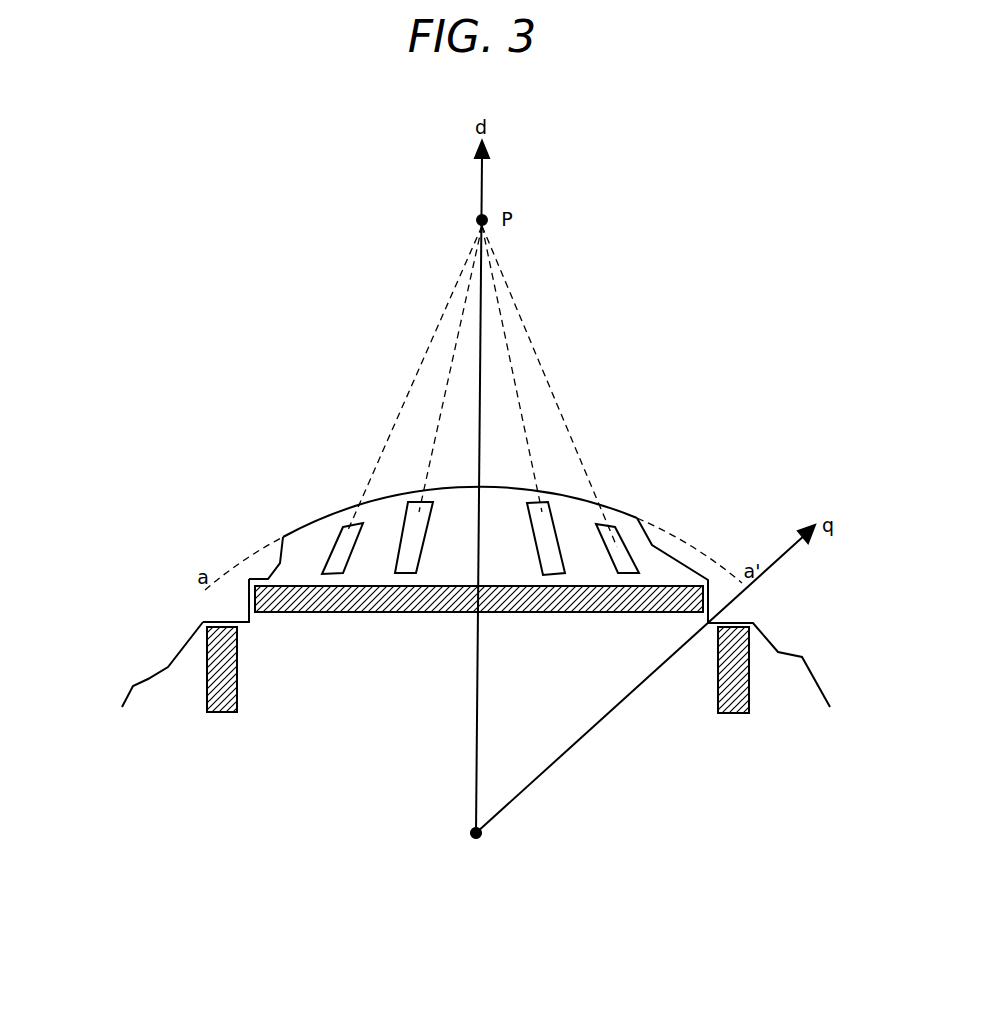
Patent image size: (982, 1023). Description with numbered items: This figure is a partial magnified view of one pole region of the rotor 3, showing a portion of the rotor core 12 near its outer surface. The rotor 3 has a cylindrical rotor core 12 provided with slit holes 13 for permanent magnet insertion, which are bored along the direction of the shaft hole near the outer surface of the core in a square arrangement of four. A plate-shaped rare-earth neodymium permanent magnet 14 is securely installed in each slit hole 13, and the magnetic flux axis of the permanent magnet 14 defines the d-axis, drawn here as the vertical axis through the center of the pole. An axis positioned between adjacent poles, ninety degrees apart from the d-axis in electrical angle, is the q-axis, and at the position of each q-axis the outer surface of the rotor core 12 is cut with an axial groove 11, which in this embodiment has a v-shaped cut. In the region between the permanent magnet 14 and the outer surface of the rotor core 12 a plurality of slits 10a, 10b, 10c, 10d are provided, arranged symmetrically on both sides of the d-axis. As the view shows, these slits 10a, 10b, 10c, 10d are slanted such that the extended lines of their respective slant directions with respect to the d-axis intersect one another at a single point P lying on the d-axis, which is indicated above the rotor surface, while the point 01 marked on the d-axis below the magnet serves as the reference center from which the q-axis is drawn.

The rotor 3 is at (692, 562).
The slit 10a is at (348, 527).
The slit 10b is at (617, 547).
The slit 10c is at (418, 503).
The slit 10d is at (540, 513).
The groove 11 is at (740, 613).
The rotor core 12 is at (170, 660).
The slit hole 13 is at (343, 614).
The permanent magnet 14 is at (258, 599).
The center point 01 is at (463, 819).